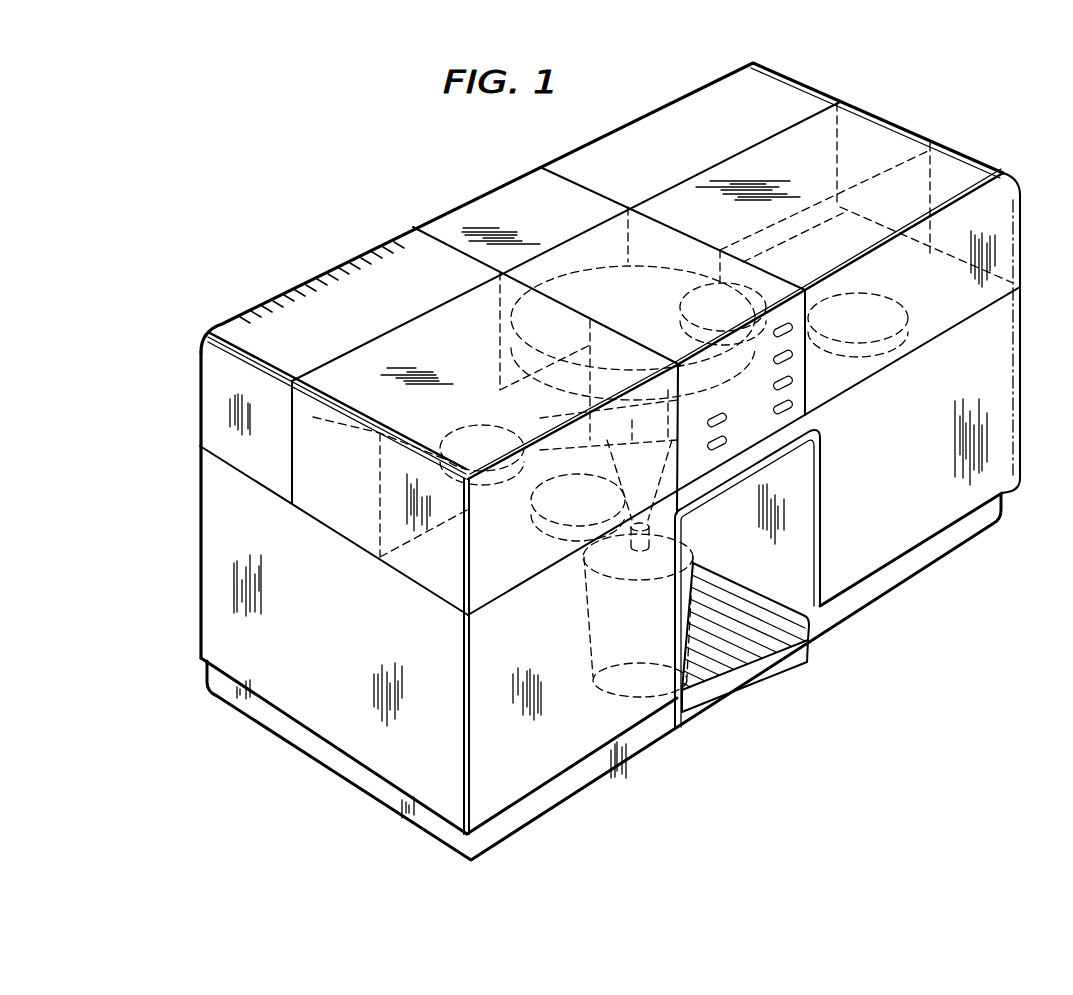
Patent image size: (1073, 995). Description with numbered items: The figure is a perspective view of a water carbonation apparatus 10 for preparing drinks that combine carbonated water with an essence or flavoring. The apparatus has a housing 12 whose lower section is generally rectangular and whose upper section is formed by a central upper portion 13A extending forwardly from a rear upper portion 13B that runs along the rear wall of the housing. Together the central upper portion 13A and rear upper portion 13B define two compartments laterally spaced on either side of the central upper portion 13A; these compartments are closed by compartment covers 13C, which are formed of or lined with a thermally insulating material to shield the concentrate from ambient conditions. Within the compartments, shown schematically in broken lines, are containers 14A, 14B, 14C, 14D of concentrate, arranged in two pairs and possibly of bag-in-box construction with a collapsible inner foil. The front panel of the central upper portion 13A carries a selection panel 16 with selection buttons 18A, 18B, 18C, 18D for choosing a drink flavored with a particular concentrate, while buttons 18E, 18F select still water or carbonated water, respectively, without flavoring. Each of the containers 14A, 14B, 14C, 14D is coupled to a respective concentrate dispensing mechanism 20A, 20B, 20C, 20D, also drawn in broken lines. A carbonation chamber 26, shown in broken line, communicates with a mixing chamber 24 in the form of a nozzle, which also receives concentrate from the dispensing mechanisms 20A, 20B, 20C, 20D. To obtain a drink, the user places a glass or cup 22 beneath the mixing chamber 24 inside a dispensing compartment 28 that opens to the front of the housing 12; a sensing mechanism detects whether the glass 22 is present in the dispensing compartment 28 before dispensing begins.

The water carbonation apparatus 10 is at (287, 251).
The housing 12 is at (203, 581).
The central upper portion 13A is at (652, 233).
The rear upper portion 13B is at (203, 385).
The compartment cover 13C is at (414, 333).
The container 14A is at (378, 368).
The container 14B is at (487, 393).
The container 14C is at (865, 137).
The container 14D is at (973, 163).
The selection panel 16 is at (823, 310).
The selection button 18A is at (795, 331).
The selection button 18B is at (795, 357).
The selection button 18C is at (795, 383).
The selection button 18D is at (795, 408).
The selection button 18E is at (730, 420).
The selection button 18F is at (730, 443).
The concentrate dispensing mechanism 20A is at (383, 433).
The concentrate dispensing mechanism 20B is at (530, 535).
The concentrate dispensing mechanism 20C is at (770, 280).
The concentrate dispensing mechanism 20D is at (860, 300).
The glass or cup 22 is at (693, 566).
The mixing chamber 24 is at (697, 503).
The carbonation chamber 26 is at (580, 262).
The dispensing compartment 28 is at (793, 543).